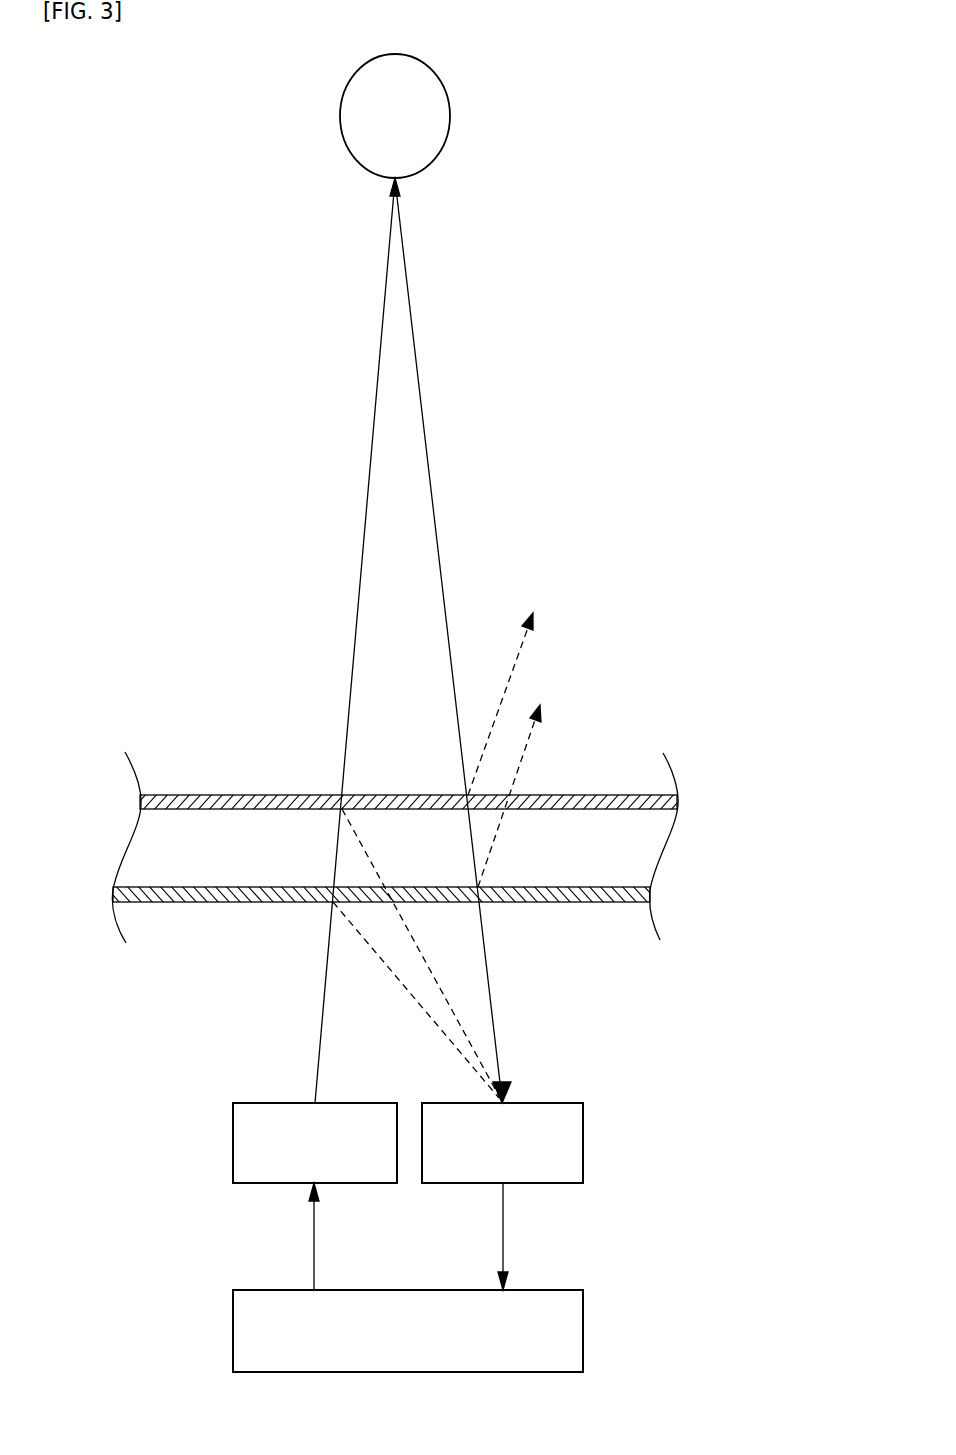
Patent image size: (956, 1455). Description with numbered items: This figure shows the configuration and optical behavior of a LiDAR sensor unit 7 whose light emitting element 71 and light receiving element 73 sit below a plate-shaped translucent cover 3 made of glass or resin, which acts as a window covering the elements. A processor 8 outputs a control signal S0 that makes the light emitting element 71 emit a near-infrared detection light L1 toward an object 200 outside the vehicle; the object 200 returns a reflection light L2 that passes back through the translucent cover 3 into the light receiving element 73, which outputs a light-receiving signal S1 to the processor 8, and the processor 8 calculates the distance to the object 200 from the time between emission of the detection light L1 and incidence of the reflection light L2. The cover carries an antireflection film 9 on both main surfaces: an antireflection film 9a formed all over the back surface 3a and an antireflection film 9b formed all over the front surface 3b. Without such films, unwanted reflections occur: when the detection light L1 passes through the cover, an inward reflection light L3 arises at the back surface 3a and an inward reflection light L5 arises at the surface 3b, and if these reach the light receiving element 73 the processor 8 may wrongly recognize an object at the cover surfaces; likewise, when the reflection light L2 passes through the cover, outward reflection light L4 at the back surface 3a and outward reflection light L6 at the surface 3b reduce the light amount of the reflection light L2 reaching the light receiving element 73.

The object 200 is at (440, 120).
The translucent cover 3 is at (372, 853).
The back surface 3a is at (237, 903).
The surface 3b is at (178, 800).
The antireflection film 9 is at (395, 853).
The antireflection film 9a is at (381, 943).
The antireflection film 9b is at (408, 757).
The LiDAR sensor unit 7 is at (623, 725).
The light emitting element 71 is at (247, 1103).
The light receiving element 73 is at (583, 1133).
The processor 8 is at (583, 1320).
The detection light L1 is at (355, 637).
The reflection light L2 is at (438, 538).
The reflection light L3 is at (382, 945).
The reflection light L4 is at (525, 754).
The reflection light L5 is at (408, 928).
The reflection light L6 is at (512, 668).
The control signal S0 is at (316, 1235).
The light-receiving signal S1 is at (505, 1233).